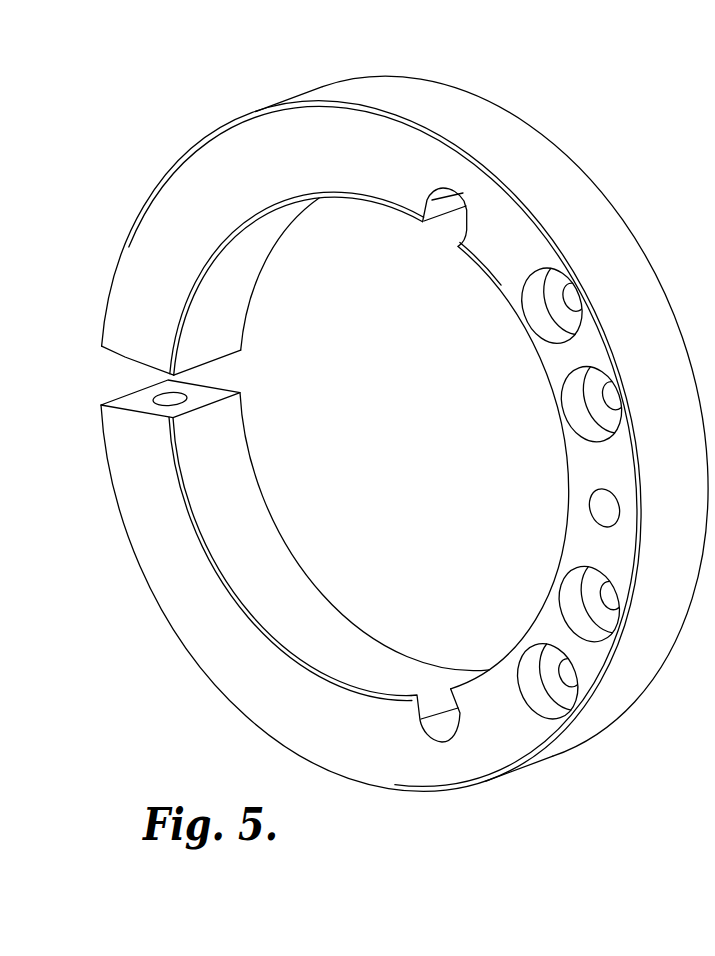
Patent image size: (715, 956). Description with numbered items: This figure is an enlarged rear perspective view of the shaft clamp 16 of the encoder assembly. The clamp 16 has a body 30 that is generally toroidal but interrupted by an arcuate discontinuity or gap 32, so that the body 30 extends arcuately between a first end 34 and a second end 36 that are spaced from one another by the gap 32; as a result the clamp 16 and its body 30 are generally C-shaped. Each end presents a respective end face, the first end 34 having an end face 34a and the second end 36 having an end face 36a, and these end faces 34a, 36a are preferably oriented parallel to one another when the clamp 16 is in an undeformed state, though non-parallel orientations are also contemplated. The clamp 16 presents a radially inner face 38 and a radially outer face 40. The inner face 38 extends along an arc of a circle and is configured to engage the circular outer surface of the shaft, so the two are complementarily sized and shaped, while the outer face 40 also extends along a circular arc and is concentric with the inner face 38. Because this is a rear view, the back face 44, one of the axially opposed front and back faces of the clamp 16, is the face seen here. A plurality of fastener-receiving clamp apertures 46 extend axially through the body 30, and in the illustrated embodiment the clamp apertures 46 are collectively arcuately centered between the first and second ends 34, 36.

The shaft clamp 16 is at (390, 412).
The body 30 is at (530, 100).
The gap 32 is at (224, 377).
The first end 34 is at (140, 366).
The end face 34a is at (147, 368).
The second end 36 is at (138, 410).
The end face 36a is at (196, 404).
The radially inner face 38 is at (240, 538).
The radially outer face 40 is at (419, 96).
The back face 44 is at (307, 704).
The clamp apertures 46 is at (578, 311).